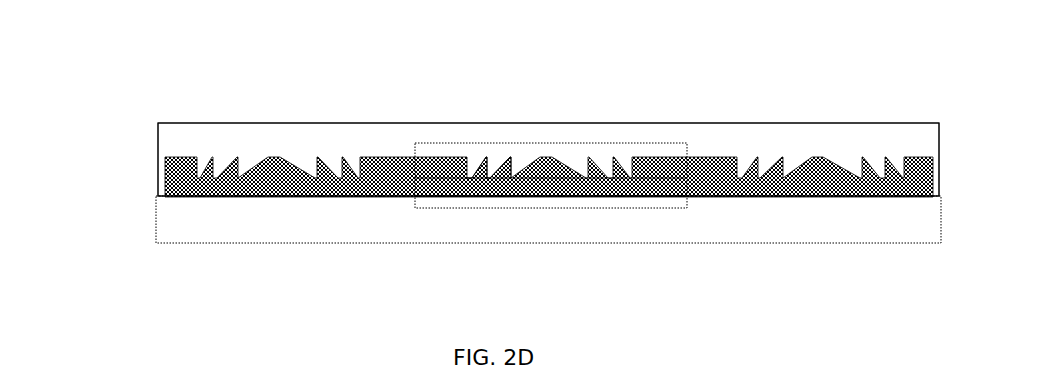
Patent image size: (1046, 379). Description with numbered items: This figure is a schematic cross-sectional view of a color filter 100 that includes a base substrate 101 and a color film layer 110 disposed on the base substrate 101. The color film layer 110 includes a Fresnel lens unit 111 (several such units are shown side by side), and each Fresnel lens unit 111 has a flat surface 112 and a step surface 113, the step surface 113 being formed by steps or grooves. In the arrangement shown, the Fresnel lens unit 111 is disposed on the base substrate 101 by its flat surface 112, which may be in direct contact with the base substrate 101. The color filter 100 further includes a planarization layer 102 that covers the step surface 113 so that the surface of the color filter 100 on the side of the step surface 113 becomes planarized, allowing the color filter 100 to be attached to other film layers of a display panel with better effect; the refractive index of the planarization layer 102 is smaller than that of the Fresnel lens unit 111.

The color filter 100 is at (924, 85).
The base substrate 101 is at (505, 219).
The planarization layer 102 is at (504, 152).
The color film layer 110 is at (501, 177).
The Fresnel lens unit 111 is at (551, 141).
The flat surface 112 is at (551, 224).
The step surface 113 is at (443, 137).